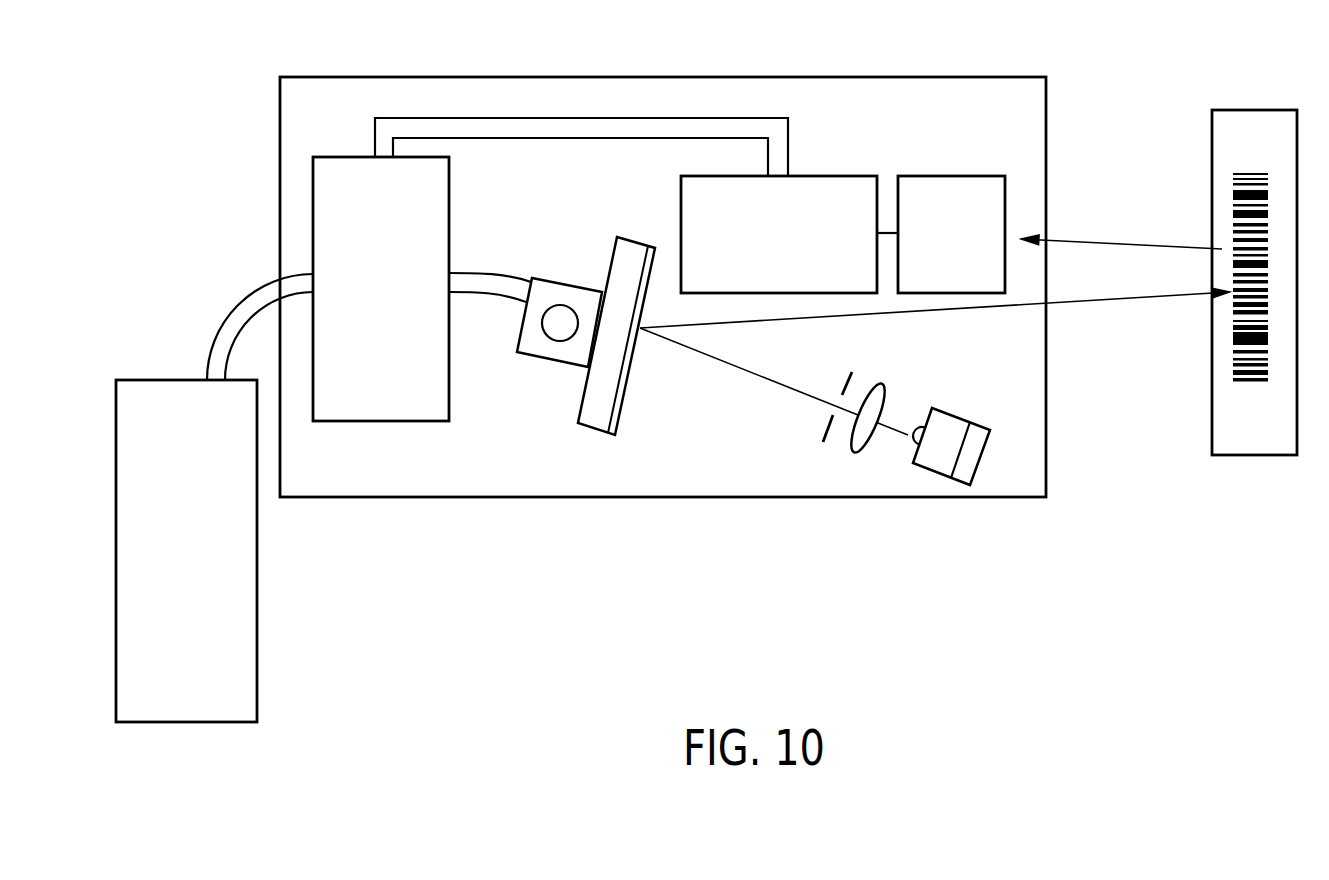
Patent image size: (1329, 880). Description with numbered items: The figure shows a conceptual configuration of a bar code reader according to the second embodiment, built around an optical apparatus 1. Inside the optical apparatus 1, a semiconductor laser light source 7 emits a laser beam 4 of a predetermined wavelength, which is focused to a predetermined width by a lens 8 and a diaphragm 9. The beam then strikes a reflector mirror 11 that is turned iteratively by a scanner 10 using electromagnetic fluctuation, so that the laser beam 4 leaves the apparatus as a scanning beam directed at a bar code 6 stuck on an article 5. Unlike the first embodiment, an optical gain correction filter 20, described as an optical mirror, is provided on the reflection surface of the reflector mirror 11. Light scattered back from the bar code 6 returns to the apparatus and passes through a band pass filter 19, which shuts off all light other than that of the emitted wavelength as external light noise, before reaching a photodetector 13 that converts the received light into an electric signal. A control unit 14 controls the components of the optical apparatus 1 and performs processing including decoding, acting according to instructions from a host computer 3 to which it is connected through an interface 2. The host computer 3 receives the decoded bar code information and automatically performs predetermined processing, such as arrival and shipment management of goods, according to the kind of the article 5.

The optical apparatus 1 is at (509, 77).
The interface 2 is at (230, 312).
The host computer 3 is at (258, 660).
The laser beam 4 is at (730, 364).
The article 5 is at (1255, 110).
The bar code 6 is at (1212, 425).
The semiconductor laser light source 7 is at (938, 468).
The lens 8 is at (856, 450).
The diaphragm 9 is at (823, 428).
The scanner 10 is at (544, 358).
The reflector mirror 11 is at (590, 428).
The photodetector 13 is at (860, 176).
The control unit 14 is at (330, 157).
The band pass filter 19 is at (953, 176).
The optical gain correction filter 20 is at (621, 417).